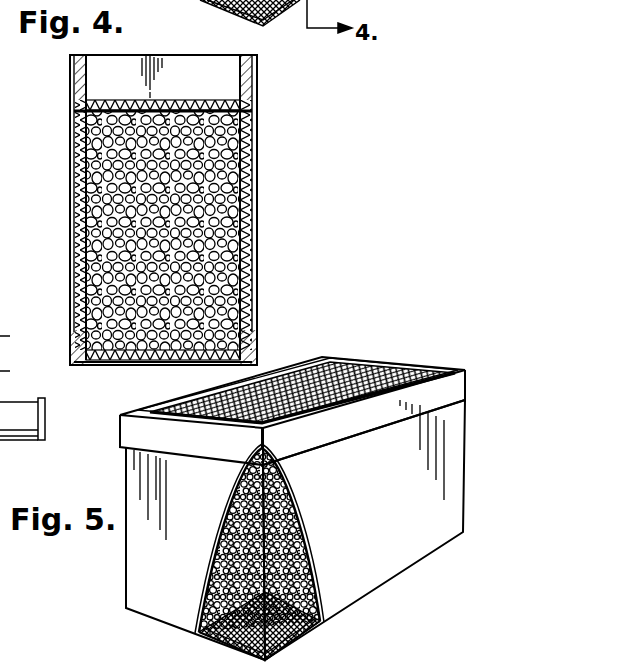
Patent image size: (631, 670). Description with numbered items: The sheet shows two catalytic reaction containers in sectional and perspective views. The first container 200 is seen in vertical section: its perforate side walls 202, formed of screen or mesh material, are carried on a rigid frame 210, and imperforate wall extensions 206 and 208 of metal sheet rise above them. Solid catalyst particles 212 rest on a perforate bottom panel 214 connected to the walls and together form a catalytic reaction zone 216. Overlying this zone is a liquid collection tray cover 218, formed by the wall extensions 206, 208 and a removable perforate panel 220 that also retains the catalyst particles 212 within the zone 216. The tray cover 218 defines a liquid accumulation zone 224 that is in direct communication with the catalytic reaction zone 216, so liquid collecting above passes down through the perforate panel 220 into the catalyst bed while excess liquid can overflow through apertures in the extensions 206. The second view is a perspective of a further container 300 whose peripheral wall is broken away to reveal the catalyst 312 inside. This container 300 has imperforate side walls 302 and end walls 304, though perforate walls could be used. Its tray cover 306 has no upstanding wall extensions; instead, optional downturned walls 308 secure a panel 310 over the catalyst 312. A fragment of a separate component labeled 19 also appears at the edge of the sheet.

In FIG. 4, the container 200 is at (268, 62).
In FIG. 4, the perforate side walls 202 is at (243, 156).
In FIG. 4, the imperforate wall extensions 206 is at (80, 75).
In FIG. 4, the imperforate wall extensions 208 is at (178, 65).
In FIG. 4, the rigid frame 210 is at (80, 291).
In FIG. 4, the solid catalyst particles 212 is at (232, 226).
In FIG. 4, the perforate bottom panel 214 is at (154, 360).
In FIG. 4, the catalytic reaction zone 216 is at (228, 258).
In FIG. 4, the liquid collection tray cover 218 is at (196, 70).
In FIG. 4, the perforate panel 220 is at (226, 96).
In FIG. 4, the liquid accumulation zone 224 is at (107, 75).
In FIG. 5, the container 300 is at (330, 354).
In FIG. 5, the imperforate side walls 302 is at (410, 550).
In FIG. 5, the imperforate end walls 304 is at (138, 558).
In FIG. 5, the tray cover 306 is at (273, 380).
In FIG. 5, the downturned walls 308 is at (143, 445).
In FIG. 5, the panel 310 is at (330, 362).
In FIG. 5, the catalyst 312 is at (300, 498).
In FIG. 5, the pipe fragment 19 is at (10, 400).